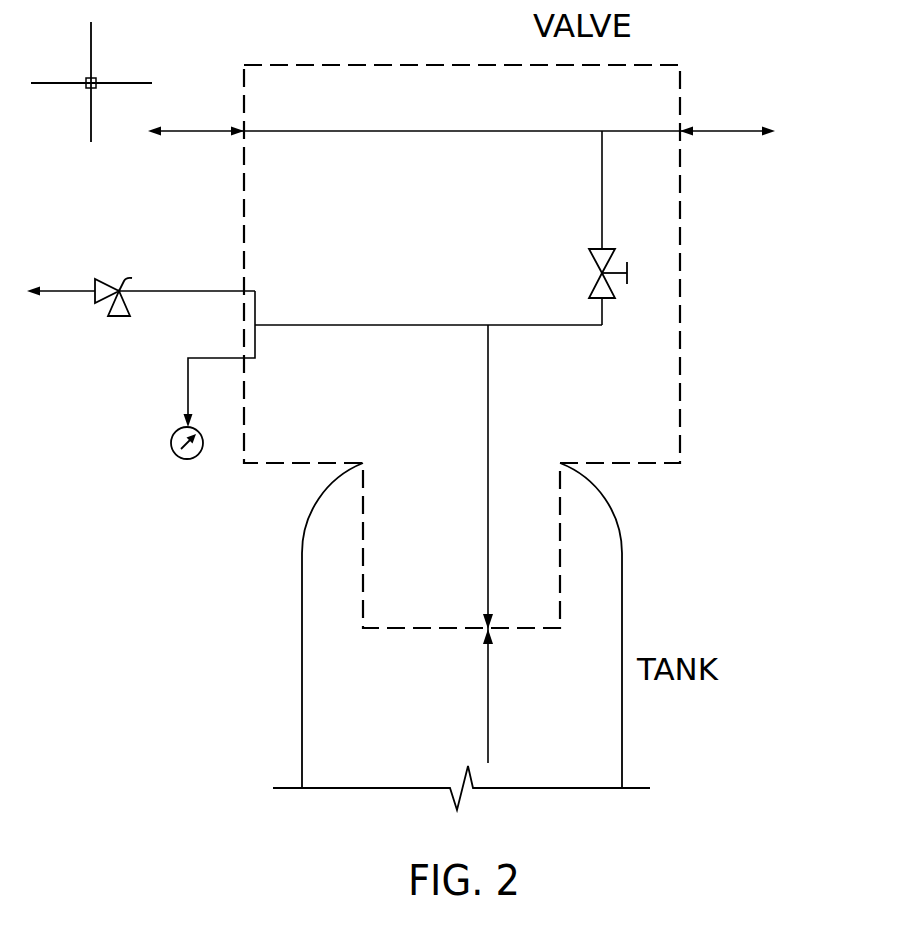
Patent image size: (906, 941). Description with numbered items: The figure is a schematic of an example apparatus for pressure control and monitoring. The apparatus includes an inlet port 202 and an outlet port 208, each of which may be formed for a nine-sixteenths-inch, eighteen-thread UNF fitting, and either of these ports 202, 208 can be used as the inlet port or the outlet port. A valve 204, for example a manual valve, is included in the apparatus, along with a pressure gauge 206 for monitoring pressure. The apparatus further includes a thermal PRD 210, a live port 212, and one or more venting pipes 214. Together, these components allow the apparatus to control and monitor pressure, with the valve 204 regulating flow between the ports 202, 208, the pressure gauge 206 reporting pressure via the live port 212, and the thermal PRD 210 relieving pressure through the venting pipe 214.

The inlet port 202 is at (461, 116).
The valve 204 is at (634, 228).
The pressure gauge 206 is at (160, 443).
The outlet port 208 is at (464, 342).
The thermal PRD 210 is at (175, 301).
The live port 212 is at (220, 359).
The venting pipe 214 is at (51, 274).